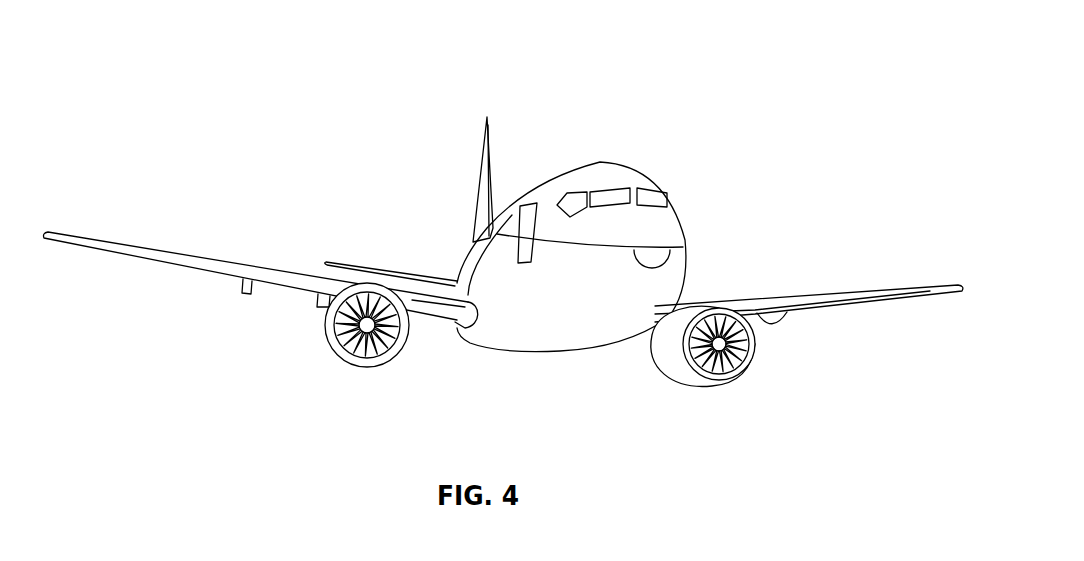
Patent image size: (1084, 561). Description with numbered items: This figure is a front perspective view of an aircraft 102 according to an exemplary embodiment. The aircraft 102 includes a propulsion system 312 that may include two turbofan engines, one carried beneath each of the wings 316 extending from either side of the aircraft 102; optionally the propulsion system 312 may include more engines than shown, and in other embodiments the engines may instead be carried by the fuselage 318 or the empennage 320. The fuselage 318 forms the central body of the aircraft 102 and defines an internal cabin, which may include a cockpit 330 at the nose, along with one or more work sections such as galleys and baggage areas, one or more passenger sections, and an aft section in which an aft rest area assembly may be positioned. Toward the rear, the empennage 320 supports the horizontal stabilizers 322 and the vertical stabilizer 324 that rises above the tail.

The aircraft 102 is at (280, 75).
The propulsion system 312 is at (791, 377).
The wings 316 is at (170, 257).
The fuselage 318 is at (686, 256).
The empennage 320 is at (471, 246).
The horizontal stabilizers 322 is at (360, 262).
The vertical stabilizer 324 is at (483, 154).
The cockpit 330 is at (660, 199).